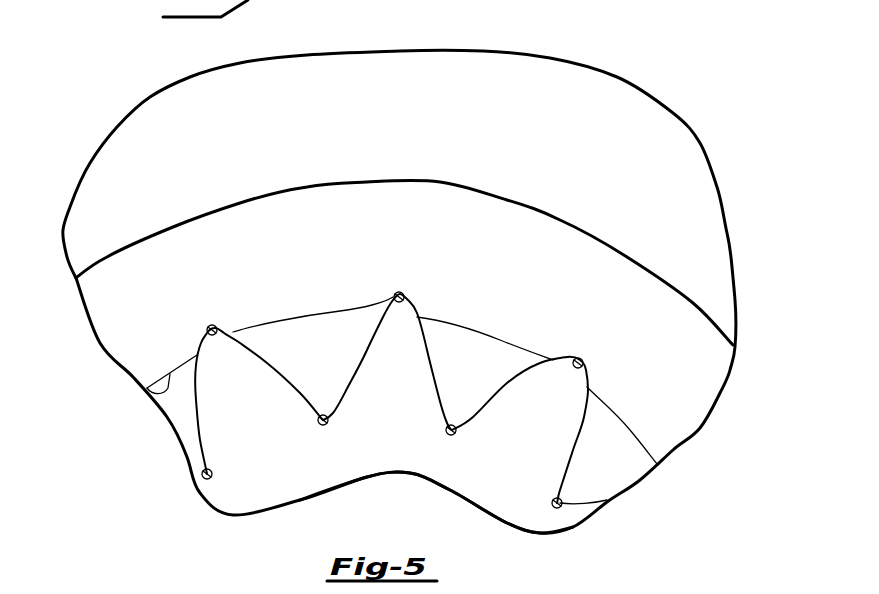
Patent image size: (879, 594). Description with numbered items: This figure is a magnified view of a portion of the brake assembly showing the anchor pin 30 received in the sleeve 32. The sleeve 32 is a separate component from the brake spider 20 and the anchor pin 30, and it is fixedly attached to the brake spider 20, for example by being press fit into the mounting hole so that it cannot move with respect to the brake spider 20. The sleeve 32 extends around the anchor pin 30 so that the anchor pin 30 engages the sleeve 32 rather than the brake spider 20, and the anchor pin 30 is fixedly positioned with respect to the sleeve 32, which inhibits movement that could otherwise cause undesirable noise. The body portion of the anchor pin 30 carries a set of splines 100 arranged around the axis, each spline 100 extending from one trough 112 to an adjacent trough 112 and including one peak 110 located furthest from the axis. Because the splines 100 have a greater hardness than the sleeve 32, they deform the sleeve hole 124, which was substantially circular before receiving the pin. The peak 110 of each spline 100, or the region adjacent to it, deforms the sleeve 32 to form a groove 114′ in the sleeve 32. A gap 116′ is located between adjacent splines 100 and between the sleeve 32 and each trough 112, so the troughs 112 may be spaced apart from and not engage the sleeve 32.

The brake spider 20 is at (485, 52).
The sleeve 32 is at (510, 196).
The anchor pin 30 is at (425, 473).
The splines 100 is at (573, 447).
The peak 110 is at (207, 326).
The troughs 112 is at (319, 422).
The groove 114′ is at (233, 332).
The gap 116′ is at (333, 366).
The sleeve hole 124 is at (147, 388).